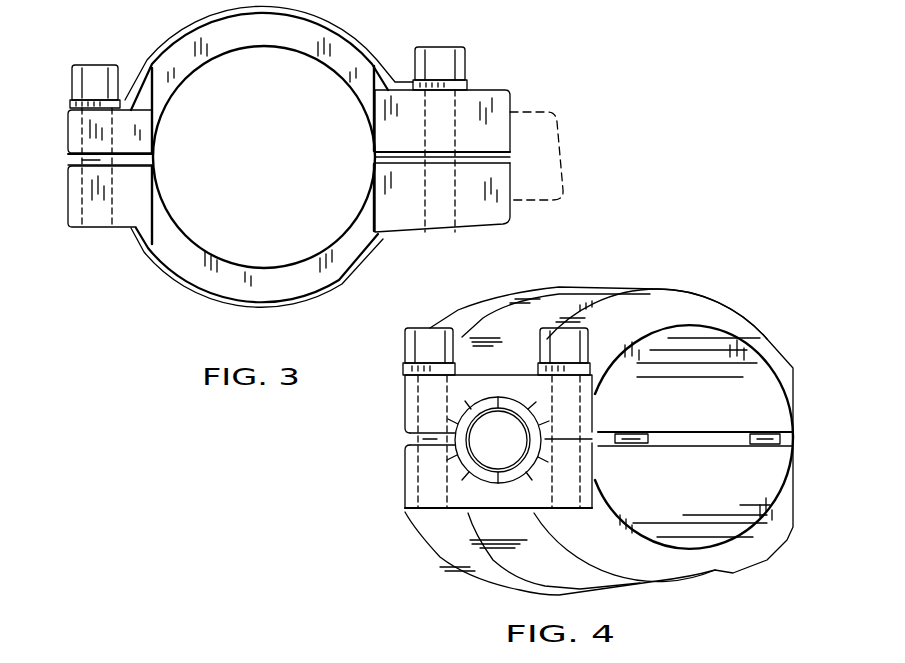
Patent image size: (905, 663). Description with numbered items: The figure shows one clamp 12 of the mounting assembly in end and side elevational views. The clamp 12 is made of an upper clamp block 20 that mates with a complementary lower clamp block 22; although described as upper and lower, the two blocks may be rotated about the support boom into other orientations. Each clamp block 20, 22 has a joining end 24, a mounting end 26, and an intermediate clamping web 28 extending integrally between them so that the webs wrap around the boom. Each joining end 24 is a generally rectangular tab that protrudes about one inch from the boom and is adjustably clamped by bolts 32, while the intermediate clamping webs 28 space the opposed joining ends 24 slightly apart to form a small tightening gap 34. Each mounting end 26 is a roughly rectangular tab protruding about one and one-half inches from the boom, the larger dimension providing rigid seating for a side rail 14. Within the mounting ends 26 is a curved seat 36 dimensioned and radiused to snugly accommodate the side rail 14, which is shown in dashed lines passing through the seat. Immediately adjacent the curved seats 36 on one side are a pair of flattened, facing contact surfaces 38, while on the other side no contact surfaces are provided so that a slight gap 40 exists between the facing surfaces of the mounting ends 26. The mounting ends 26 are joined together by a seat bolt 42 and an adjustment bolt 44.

In FIG. 3, the clamp 12 is at (163, 282).
In FIG. 4, the clamp 12 is at (417, 553).
In FIG. 3, the side rail 14 is at (530, 98).
In FIG. 4, the side rail 14 is at (494, 466).
In FIG. 3, the upper clamp block 20 is at (328, 40).
In FIG. 4, the upper clamp block 20 is at (558, 295).
In FIG. 3, the lower clamp block 22 is at (220, 288).
In FIG. 4, the lower clamp block 22 is at (518, 578).
In FIG. 3, the joining end 24 is at (72, 123).
In FIG. 3, the mounting end 26 is at (397, 90).
In FIG. 4, the mounting end 26 is at (405, 393).
In FIG. 3, the intermediate clamping web 28 is at (203, 65).
In FIG. 4, the intermediate clamping web 28 is at (685, 300).
In FIG. 3, the bolt 32 is at (72, 90).
In FIG. 4, the bolt 32 is at (762, 448).
In FIG. 3, the tightening gap 34 is at (72, 160).
In FIG. 4, the tightening gap 34 is at (787, 433).
In FIG. 4, the curved seat 36 is at (507, 393).
In FIG. 3, the contact surface 38 is at (508, 157).
In FIG. 4, the contact surface 38 is at (590, 428).
In FIG. 4, the gap 40 is at (407, 440).
In FIG. 4, the seat bolt 42 is at (553, 328).
In FIG. 3, the adjustment bolt 44 is at (465, 58).
In FIG. 4, the adjustment bolt 44 is at (415, 355).